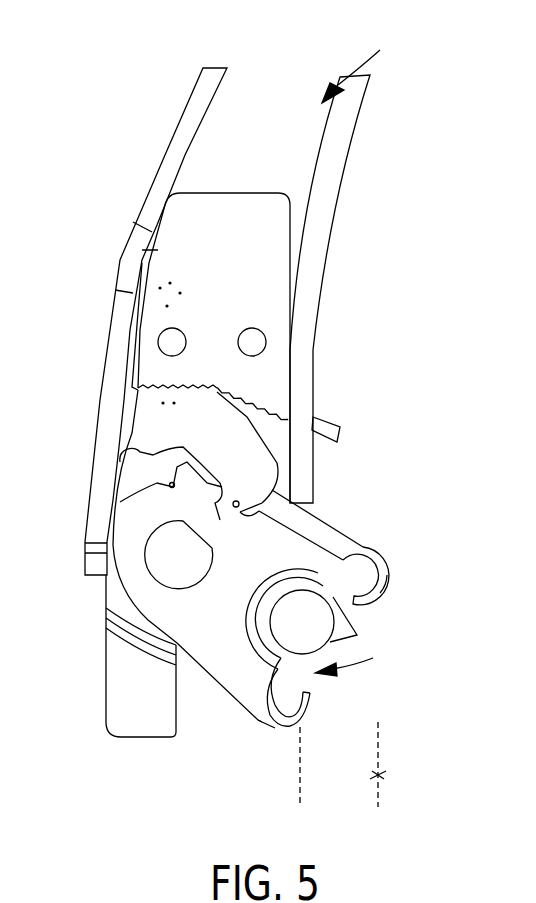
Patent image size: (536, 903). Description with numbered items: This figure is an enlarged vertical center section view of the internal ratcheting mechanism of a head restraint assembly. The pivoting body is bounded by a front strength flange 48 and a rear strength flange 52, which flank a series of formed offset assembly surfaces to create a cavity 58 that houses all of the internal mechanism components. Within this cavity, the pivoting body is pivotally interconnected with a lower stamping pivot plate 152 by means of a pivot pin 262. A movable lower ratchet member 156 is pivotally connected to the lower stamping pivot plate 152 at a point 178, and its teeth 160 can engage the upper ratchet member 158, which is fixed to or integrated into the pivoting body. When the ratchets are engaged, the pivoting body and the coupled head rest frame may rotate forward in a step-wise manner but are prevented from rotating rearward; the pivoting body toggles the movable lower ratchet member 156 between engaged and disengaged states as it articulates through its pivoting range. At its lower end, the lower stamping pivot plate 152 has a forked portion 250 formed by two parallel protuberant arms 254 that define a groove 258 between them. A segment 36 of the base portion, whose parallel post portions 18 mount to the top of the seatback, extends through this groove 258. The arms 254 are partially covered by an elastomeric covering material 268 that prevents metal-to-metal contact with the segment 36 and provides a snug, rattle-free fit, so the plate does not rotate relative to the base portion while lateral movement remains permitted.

The post portion 18 is at (386, 774).
The segment 36 is at (310, 645).
The front strength flange 48 is at (185, 146).
The rear strength flange 52 is at (335, 138).
The cavity 58 is at (354, 60).
The lower stamping pivot plate 152 is at (295, 522).
The movable lower ratchet member 156 is at (130, 435).
The upper ratchet member 158 is at (146, 241).
The teeth 160 is at (157, 388).
The point 178 is at (240, 502).
The forked portion 250 is at (330, 571).
The arms 254 is at (371, 580).
The groove 258 is at (362, 660).
The pivot pin 262 is at (167, 565).
The elastomeric covering material 268 is at (270, 730).